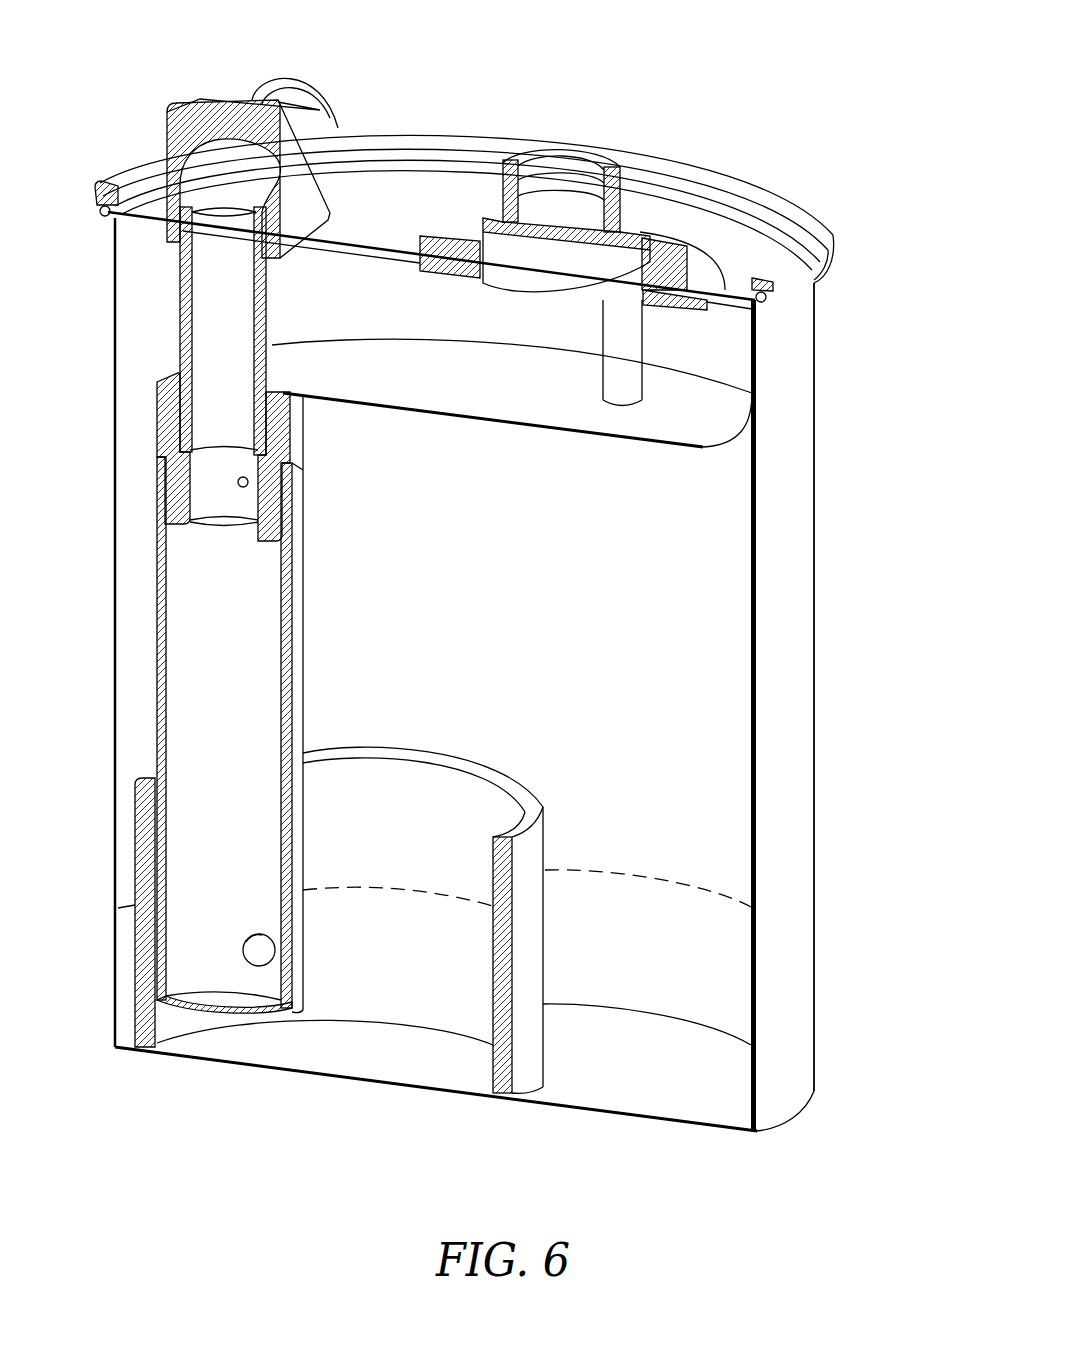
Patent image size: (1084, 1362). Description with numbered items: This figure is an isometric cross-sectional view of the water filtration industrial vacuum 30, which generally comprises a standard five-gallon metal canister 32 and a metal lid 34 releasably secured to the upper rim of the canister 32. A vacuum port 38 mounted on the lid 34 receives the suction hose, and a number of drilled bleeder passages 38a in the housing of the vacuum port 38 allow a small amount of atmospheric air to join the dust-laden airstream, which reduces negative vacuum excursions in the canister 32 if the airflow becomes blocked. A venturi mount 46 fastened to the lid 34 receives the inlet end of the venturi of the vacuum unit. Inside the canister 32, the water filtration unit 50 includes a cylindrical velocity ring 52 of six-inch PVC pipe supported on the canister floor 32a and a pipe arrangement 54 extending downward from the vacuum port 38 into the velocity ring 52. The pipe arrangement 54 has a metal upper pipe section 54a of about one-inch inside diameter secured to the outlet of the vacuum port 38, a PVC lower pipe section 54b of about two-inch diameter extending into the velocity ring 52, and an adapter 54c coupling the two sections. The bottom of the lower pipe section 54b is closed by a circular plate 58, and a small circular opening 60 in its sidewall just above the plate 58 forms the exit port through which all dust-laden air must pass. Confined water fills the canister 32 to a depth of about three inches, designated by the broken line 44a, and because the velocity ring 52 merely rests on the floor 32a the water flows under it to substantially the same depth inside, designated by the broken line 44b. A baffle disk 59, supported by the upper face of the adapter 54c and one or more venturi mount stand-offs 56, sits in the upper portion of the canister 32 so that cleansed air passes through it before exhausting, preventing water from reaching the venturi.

The water filtration industrial vacuum 30 is at (878, 148).
The canister 32 is at (783, 490).
The canister floor 32a is at (616, 1082).
The lid 34 is at (745, 250).
The vacuum port 38 is at (205, 105).
The bleeder passages 38a is at (173, 153).
The broken line 44a is at (657, 880).
The broken line 44b is at (366, 887).
The venturi mount 46 is at (676, 232).
The water filtration unit 50 is at (433, 557).
The velocity ring 52 is at (529, 802).
The pipe arrangement 54 is at (133, 318).
The upper pipe section 54a is at (268, 331).
The lower pipe section 54b is at (303, 630).
The adapter 54c is at (296, 433).
The venturi mount stand-off 56 is at (612, 378).
The circular plate 58 is at (224, 990).
The baffle disk 59 is at (684, 436).
The circular opening 60 is at (262, 948).